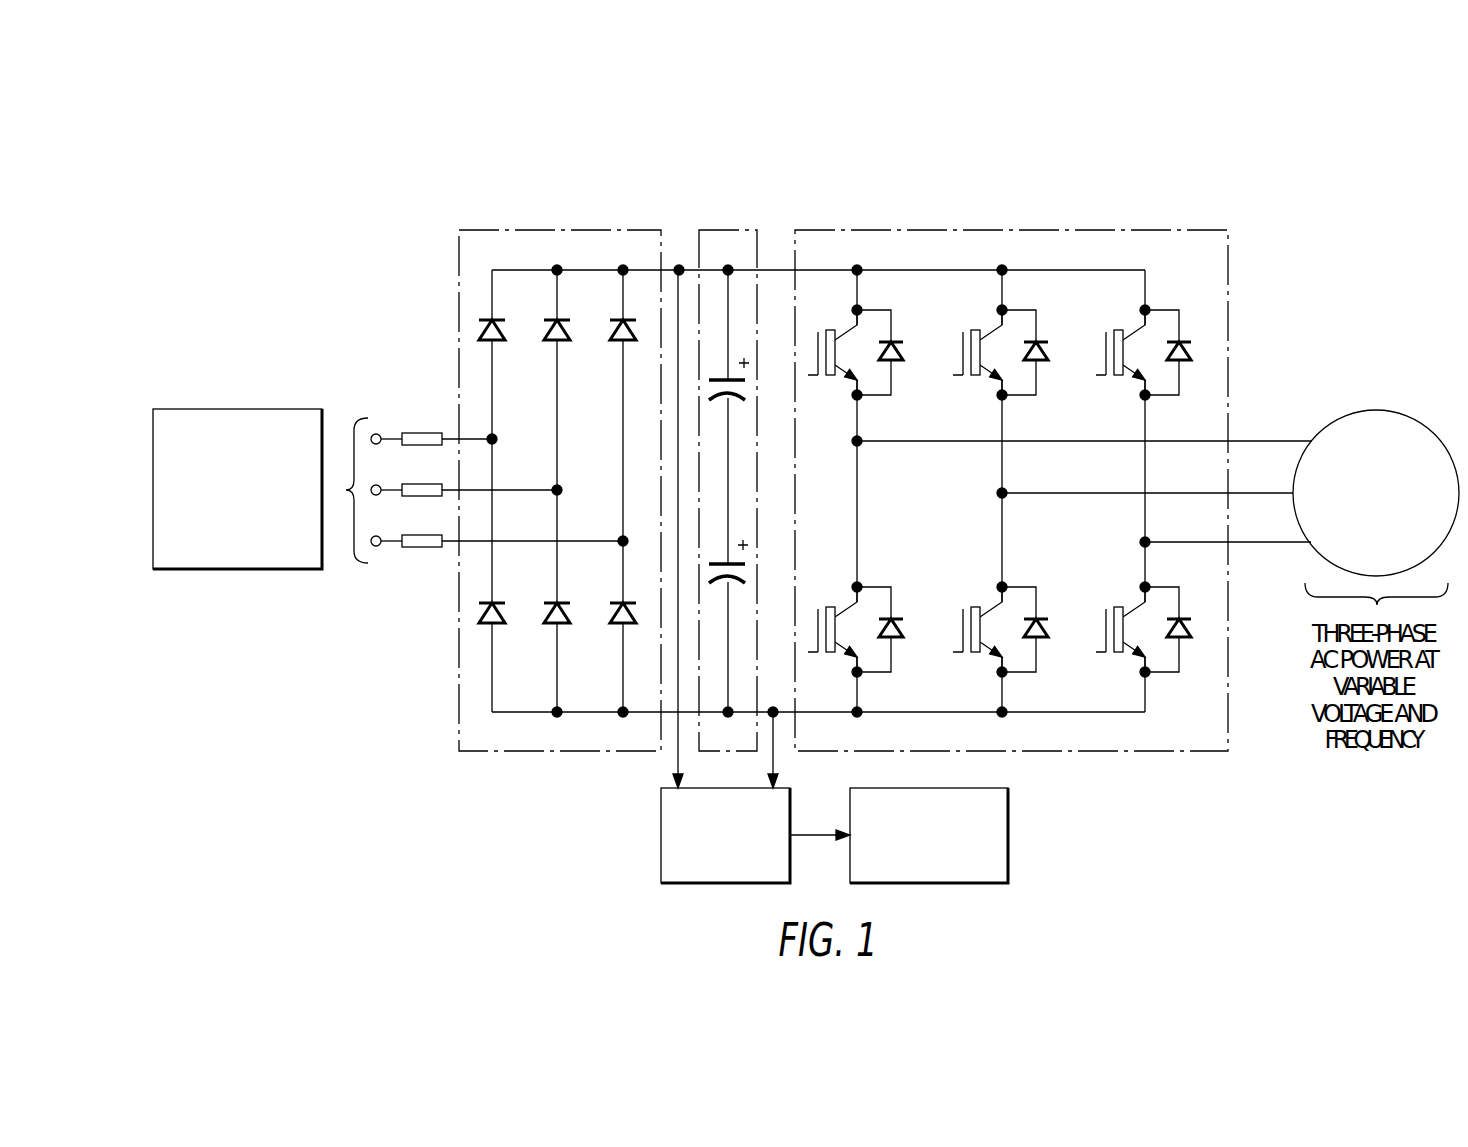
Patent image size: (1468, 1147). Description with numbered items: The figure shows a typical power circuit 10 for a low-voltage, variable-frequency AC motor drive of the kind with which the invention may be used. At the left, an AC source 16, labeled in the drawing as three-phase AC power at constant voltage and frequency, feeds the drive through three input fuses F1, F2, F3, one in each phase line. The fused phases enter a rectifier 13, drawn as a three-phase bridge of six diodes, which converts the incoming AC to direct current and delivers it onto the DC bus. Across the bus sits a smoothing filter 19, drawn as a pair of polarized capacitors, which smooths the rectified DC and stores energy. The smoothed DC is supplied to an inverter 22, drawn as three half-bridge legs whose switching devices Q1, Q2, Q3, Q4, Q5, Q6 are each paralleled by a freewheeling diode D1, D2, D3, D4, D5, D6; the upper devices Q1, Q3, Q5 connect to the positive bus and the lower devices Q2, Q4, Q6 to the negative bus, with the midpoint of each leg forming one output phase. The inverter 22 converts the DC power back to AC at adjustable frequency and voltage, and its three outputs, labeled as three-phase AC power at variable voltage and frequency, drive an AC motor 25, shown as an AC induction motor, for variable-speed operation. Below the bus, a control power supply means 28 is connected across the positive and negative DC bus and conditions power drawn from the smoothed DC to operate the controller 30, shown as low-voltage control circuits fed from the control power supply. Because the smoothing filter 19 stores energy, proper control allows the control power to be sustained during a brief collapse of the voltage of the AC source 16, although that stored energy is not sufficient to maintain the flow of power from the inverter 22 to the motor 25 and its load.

The power circuit 10 is at (403, 181).
The rectifier 13 is at (490, 230).
The AC source 16 is at (250, 409).
The smoothing filter 19 is at (723, 230).
The inverter 22 is at (1048, 230).
The AC motor 25 is at (1362, 410).
The control power supply means 28 is at (661, 835).
The controller 30 is at (1008, 800).
The fuse F1 is at (431, 425).
The fuse F2 is at (464, 476).
The fuse F3 is at (497, 527).
The IGBT switch Q1 is at (839, 352).
The IGBT switch Q2 is at (839, 629).
The IGBT switch Q3 is at (984, 352).
The IGBT switch Q4 is at (984, 629).
The IGBT switch Q5 is at (1127, 352).
The IGBT switch Q6 is at (1127, 629).
The freewheeling diode D1 is at (895, 352).
The freewheeling diode D2 is at (895, 629).
The freewheeling diode D3 is at (1040, 352).
The freewheeling diode D4 is at (1040, 629).
The freewheeling diode D5 is at (1183, 352).
The freewheeling diode D6 is at (1183, 629).